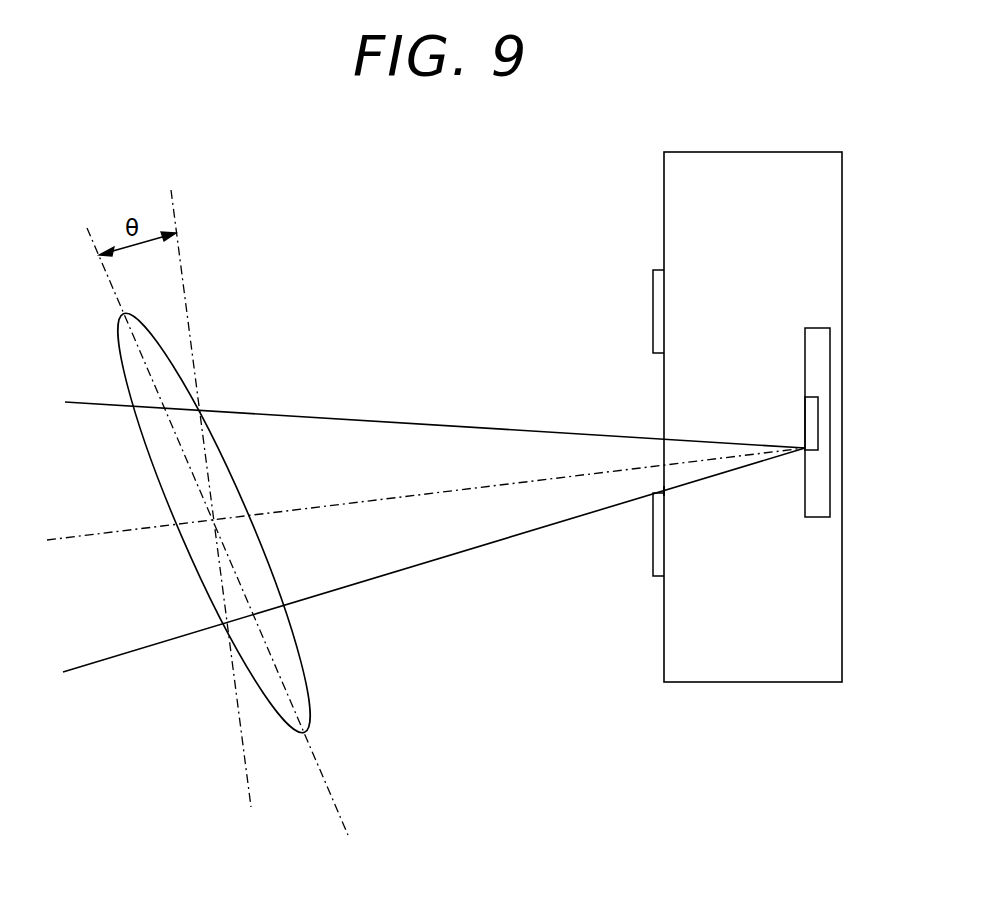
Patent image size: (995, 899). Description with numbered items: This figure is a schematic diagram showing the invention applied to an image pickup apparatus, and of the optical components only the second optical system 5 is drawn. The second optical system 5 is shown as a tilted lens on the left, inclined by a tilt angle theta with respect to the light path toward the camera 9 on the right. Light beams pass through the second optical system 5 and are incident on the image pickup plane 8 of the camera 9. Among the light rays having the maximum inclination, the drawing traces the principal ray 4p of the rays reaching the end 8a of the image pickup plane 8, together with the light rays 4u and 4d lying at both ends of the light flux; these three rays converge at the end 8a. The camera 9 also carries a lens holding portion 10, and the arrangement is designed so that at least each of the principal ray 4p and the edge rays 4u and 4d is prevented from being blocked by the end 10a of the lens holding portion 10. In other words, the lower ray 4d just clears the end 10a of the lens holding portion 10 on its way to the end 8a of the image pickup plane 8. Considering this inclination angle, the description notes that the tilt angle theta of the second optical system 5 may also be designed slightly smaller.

The second optical system 5 is at (122, 366).
The light ray at one end of the light flux 4u is at (418, 422).
The principal ray 4p is at (352, 503).
The light ray at the other end of the light flux 4d is at (408, 568).
The image pickup plane 8 is at (808, 413).
The end of the image pickup plane 8a is at (803, 452).
The camera 9 is at (735, 682).
The lens holding portion 10 is at (655, 552).
The end of the lens holding portion 10a is at (667, 492).